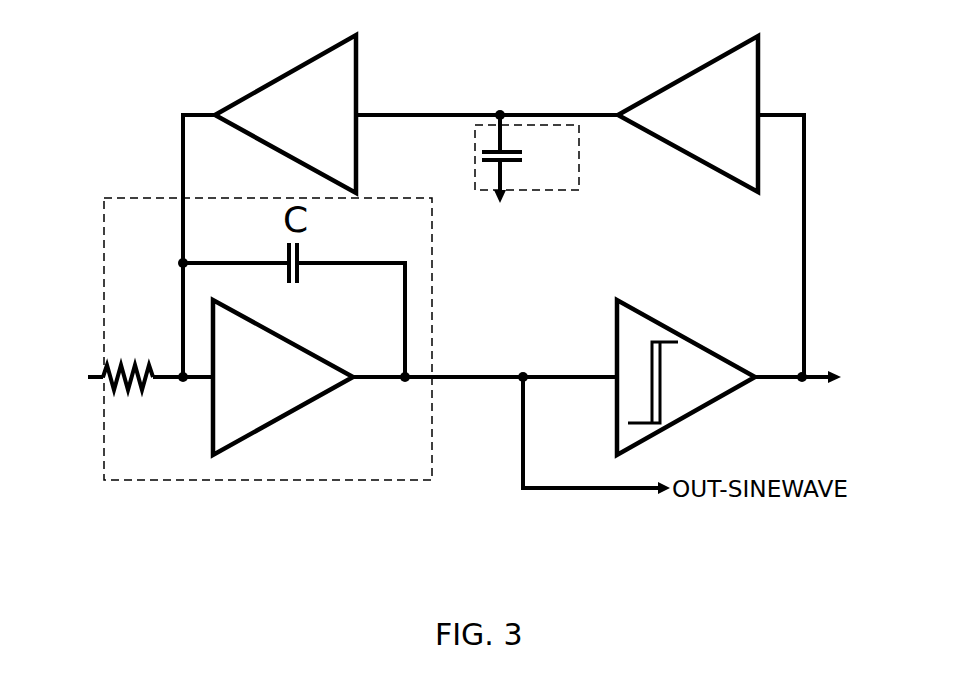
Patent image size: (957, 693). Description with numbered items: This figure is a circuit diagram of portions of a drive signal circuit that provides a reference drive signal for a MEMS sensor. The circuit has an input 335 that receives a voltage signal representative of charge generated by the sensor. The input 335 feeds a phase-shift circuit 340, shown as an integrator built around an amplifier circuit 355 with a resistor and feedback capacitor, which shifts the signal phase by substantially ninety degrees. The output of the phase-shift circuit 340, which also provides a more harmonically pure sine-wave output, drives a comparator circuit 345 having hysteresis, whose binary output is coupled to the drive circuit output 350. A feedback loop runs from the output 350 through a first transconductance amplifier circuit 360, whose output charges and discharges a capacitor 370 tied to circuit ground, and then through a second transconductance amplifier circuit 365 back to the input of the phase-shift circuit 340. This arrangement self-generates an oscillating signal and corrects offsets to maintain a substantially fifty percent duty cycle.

The input 335 is at (90, 378).
The phase-shift circuit 340 is at (432, 287).
The comparator circuit 345 is at (705, 347).
The output 350 is at (817, 373).
The amplifier circuit 355 is at (303, 345).
The first transconductance amplifier circuit 360 is at (759, 65).
The second transconductance amplifier circuit 365 is at (357, 63).
The capacitor 370 is at (580, 168).